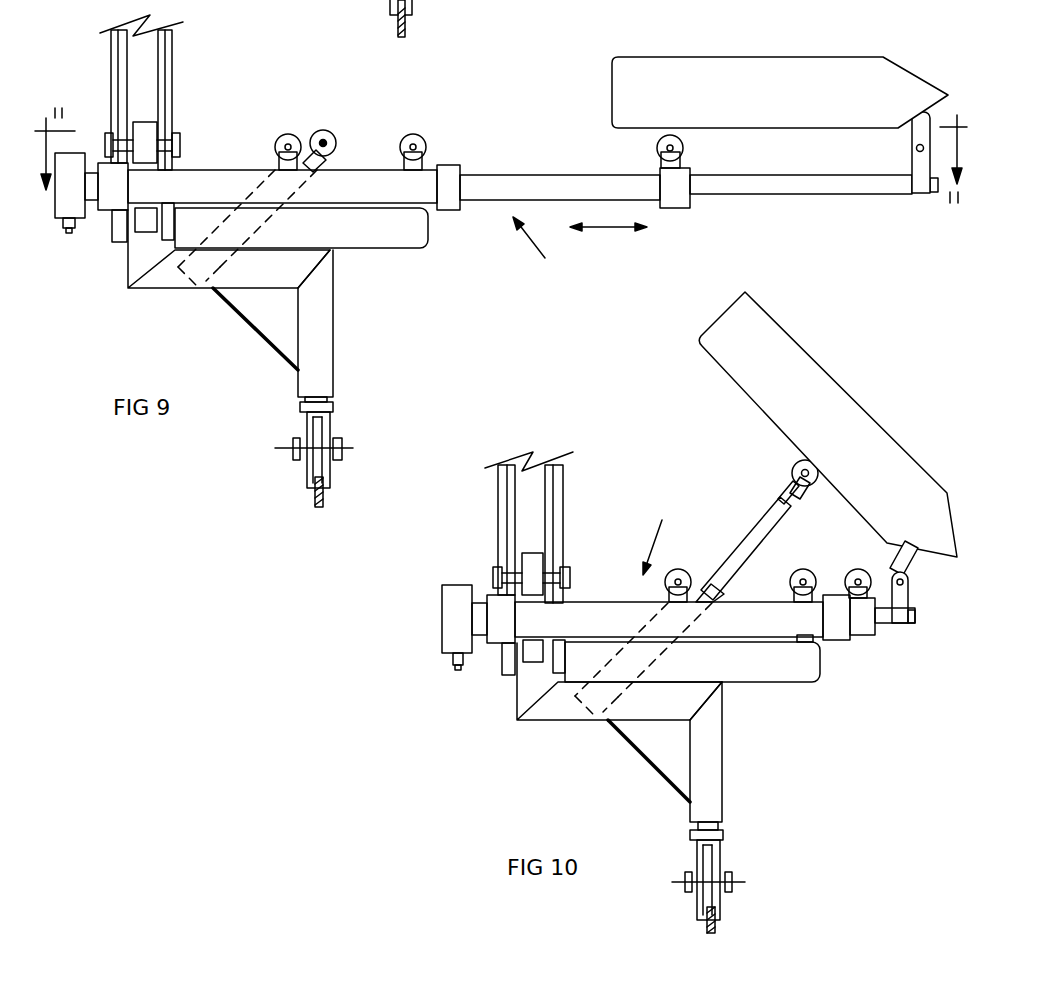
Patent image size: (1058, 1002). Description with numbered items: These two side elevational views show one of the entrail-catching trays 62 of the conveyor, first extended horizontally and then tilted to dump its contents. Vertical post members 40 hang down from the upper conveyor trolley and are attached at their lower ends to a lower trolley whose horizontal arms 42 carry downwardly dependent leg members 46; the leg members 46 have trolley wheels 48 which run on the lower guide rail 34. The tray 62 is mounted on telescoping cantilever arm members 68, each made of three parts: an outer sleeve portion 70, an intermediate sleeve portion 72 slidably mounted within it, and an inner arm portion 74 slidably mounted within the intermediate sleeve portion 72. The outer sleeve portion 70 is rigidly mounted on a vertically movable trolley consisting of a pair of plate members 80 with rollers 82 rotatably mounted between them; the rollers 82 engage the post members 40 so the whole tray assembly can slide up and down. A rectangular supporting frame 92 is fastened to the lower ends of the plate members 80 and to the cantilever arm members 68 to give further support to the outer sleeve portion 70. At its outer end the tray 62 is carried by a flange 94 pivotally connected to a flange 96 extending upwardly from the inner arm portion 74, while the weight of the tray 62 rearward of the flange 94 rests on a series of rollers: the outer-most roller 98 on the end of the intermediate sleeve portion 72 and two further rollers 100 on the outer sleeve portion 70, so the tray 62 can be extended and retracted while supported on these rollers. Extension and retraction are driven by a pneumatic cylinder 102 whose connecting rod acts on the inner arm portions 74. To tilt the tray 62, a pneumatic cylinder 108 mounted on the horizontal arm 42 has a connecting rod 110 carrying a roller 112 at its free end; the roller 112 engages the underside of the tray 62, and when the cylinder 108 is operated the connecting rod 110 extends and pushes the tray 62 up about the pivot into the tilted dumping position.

In FIG. 9, the guide rail 34 is at (318, 505).
In FIG. 10, the guide rail 34 is at (715, 923).
In FIG. 9, the vertical post members 40 is at (150, 58).
In FIG. 10, the vertical post members 40 is at (525, 503).
In FIG. 9, the horizontal arms 42 is at (253, 273).
In FIG. 10, the horizontal arms 42 is at (653, 710).
In FIG. 9, the leg members 46 is at (322, 322).
In FIG. 10, the leg members 46 is at (718, 768).
In FIG. 9, the trolley wheels 48 is at (318, 440).
In FIG. 10, the trolley wheels 48 is at (710, 868).
In FIG. 9, the tray 62 is at (800, 70).
In FIG. 10, the tray 62 is at (825, 368).
In FIG. 9, the telescoping cantilever arm members 68 is at (580, 252).
In FIG. 10, the telescoping cantilever arm members 68 is at (662, 536).
In FIG. 9, the outer sleeve portion 70 is at (375, 178).
In FIG. 10, the outer sleeve portion 70 is at (605, 613).
In FIG. 9, the intermediate sleeve portion 72 is at (545, 180).
In FIG. 10, the intermediate sleeve portion 72 is at (863, 638).
In FIG. 9, the inner arm portion 74 is at (808, 192).
In FIG. 10, the inner arm portion 74 is at (887, 625).
In FIG. 9, the plate members 80 is at (112, 85).
In FIG. 10, the plate members 80 is at (498, 532).
In FIG. 9, the rollers 82 is at (150, 135).
In FIG. 10, the rollers 82 is at (537, 552).
In FIG. 9, the rectangular supporting frame 92 is at (418, 240).
In FIG. 10, the rectangular supporting frame 92 is at (787, 672).
In FIG. 9, the flange 94 is at (912, 135).
In FIG. 10, the flange 94 is at (928, 567).
In FIG. 9, the flange 96 is at (912, 165).
In FIG. 10, the flange 96 is at (907, 600).
In FIG. 9, the outer-most roller 98 is at (685, 142).
In FIG. 9, the rollers 100 is at (285, 132).
In FIG. 9, the pneumatic cylinder 102 is at (65, 207).
In FIG. 10, the pneumatic cylinder 102 is at (453, 632).
In FIG. 10, the pneumatic cylinders 108 is at (712, 597).
In FIG. 10, the connecting rods 110 is at (740, 543).
In FIG. 9, the rollers 112 is at (323, 128).
In FIG. 10, the rollers 112 is at (800, 465).